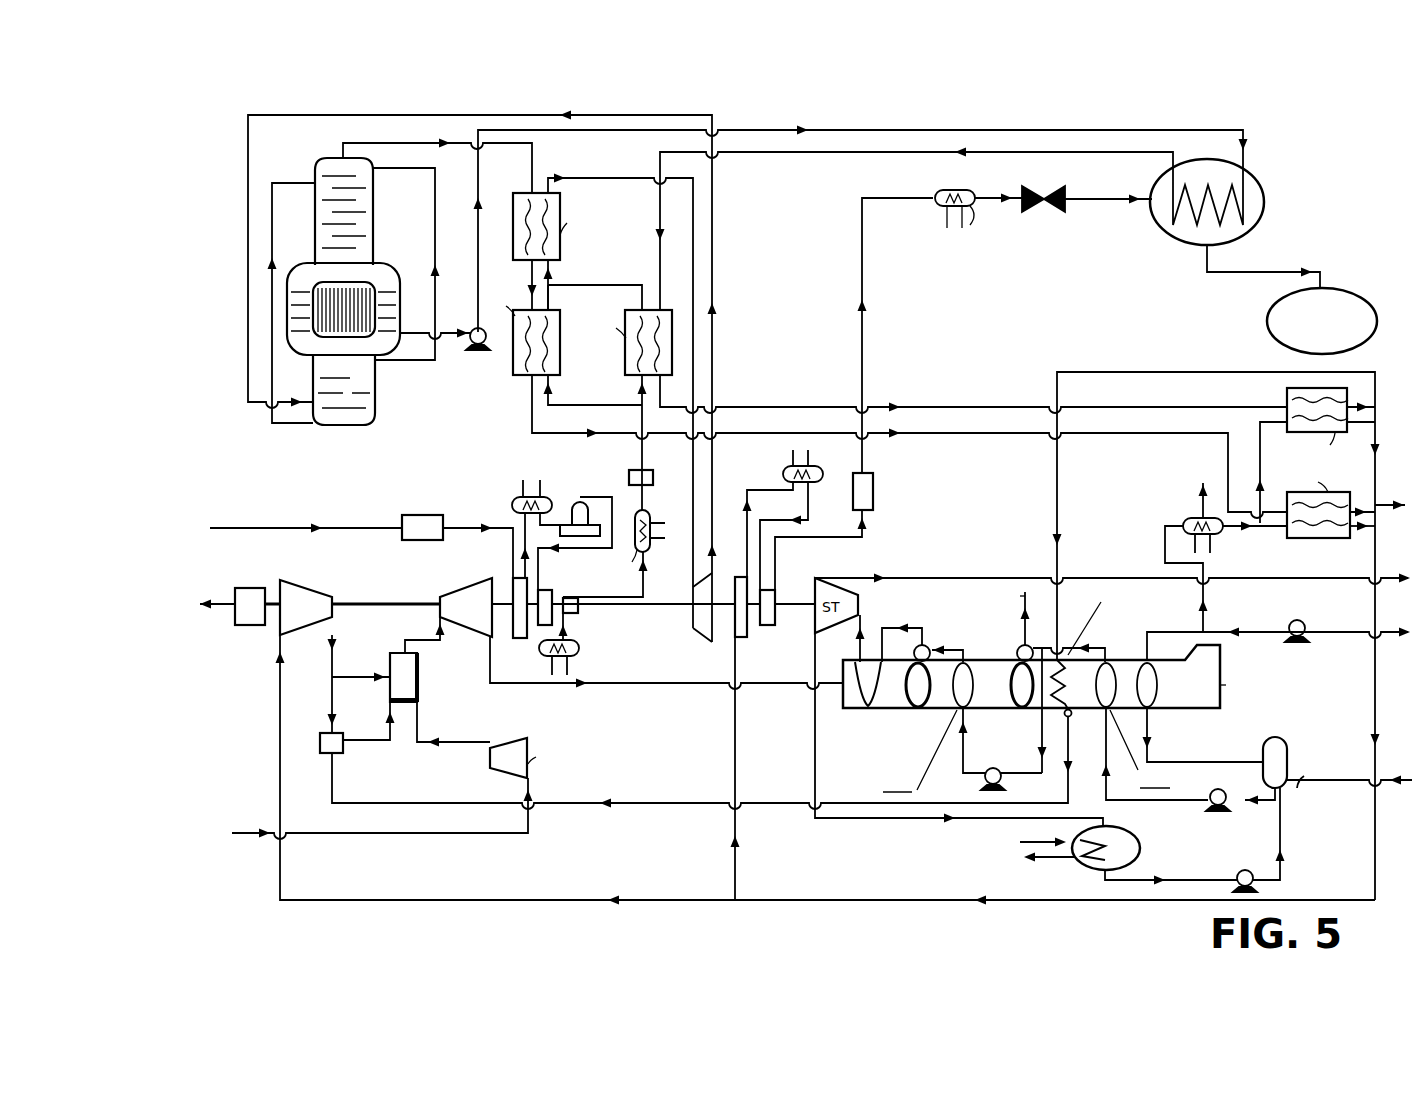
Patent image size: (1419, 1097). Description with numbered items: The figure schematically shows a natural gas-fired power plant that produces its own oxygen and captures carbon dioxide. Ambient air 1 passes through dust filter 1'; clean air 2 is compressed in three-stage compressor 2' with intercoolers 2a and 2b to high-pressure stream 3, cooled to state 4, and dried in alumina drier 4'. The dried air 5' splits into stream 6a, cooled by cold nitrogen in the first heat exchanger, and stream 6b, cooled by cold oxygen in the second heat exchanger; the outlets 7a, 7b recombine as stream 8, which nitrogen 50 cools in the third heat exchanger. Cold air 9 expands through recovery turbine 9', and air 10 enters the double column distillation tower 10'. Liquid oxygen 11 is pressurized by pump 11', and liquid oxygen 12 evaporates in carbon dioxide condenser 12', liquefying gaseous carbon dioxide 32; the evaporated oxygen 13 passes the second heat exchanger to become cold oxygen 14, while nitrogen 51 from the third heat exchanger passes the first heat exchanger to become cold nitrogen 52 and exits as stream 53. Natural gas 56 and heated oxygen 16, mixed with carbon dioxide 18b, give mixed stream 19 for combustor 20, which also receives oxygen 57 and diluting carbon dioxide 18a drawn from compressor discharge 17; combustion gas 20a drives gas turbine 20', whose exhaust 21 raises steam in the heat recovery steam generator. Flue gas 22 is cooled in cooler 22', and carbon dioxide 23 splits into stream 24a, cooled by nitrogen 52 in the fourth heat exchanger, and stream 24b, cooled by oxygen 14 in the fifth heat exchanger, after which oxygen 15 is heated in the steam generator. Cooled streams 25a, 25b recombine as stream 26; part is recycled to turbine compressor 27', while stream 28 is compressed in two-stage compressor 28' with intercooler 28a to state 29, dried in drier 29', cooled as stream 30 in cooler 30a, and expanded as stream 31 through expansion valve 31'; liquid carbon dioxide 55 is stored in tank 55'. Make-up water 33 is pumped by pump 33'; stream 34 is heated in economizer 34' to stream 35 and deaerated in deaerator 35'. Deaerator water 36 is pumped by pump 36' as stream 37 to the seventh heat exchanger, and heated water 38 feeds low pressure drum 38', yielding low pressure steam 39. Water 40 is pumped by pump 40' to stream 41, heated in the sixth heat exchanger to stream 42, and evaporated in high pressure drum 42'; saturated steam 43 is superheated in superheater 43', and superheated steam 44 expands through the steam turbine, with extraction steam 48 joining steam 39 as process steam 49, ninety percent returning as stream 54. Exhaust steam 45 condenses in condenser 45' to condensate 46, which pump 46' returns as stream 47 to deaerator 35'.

The ambient air stream 1 is at (306, 518).
The dust filter 1' is at (433, 518).
The clean air stream 2 is at (478, 540).
The cooler 2a is at (513, 504).
The cooler 2b is at (584, 649).
The three-stage compressor 2' is at (592, 608).
The compressed air stream 3 is at (641, 584).
The cooled air state 4 is at (618, 527).
The alumina drier 4' is at (628, 467).
The dried air stream 5' is at (655, 445).
The air stream 6a is at (551, 398).
The air stream 6b is at (638, 394).
The air stream from HX1 7a is at (548, 297).
The air stream from HX2 7b is at (642, 297).
The recombined air stream 8 is at (556, 270).
The compressed cold air stream 9 is at (620, 371).
The recovery turbine 9' is at (693, 629).
The air stream 10 is at (495, 368).
The double column distillation tower 10' is at (357, 310).
The liquid oxygen stream 11 is at (435, 322).
The pump 11' is at (476, 364).
The pressurized liquid oxygen stream 12 is at (850, 219).
The CO2 condenser 12' is at (1271, 198).
The oxygen return stream 13 is at (1068, 152).
The cold oxygen stream 14 is at (660, 390).
The gaseous oxygen stream 15 is at (1180, 372).
The heated oxygen stream 16 is at (373, 803).
The CO2 stream from compressor 17 is at (332, 669).
The CO2 stream 18a is at (358, 677).
The CO2 stream 18b is at (332, 698).
The mixed stream 19 is at (377, 745).
The combustor 20 is at (450, 686).
The gas turbine 20' is at (455, 603).
The combustion gas stream 20a is at (420, 635).
The CO2/H2O exhaust stream 21 is at (617, 688).
The flue gas stream 22 is at (1172, 579).
The cooler 22' is at (1150, 517).
The cooled CO2 stream 23 is at (1236, 528).
The CO2 stream 24a is at (1276, 530).
The CO2 stream 24b is at (1260, 422).
The water stream from HX4 25a is at (1362, 530).
The water stream from HX5 25b is at (1358, 424).
The recombined CO2 stream 26 is at (1375, 691).
The compressor 27' is at (467, 727).
The CO2 stream 28 is at (721, 768).
The two-stage compressor 28' is at (695, 624).
The cooler 28a is at (788, 470).
The compressed CO2 state 29 is at (821, 550).
The drier 29' is at (889, 495).
The compressed dry CO2 stream 30 is at (864, 372).
The cooler 30a is at (953, 226).
The cooled CO2 stream 31 is at (998, 189).
The expansion valve 31' is at (1052, 226).
The pure CO2 gas stream 32 is at (1091, 199).
The make-up water stream 33 is at (1400, 651).
The pump 33' is at (1305, 635).
The pumped water stream 34 is at (1206, 648).
The economizer 34' is at (1192, 708).
The heated water stream 35 is at (1203, 735).
The deaerator 35' is at (1304, 748).
The mixed water state 36 is at (1252, 788).
The pump 36' is at (1229, 812).
The water stream to HX7 37 is at (1140, 804).
The water stream to LP drum 38 is at (1075, 697).
The low pressure drum 38' is at (1008, 699).
The low pressure steam stream 39 is at (1023, 618).
The water stream 40 is at (1021, 763).
The pump 40' is at (1048, 693).
The high pressure water stream 41 is at (963, 768).
The heated water stream 42 is at (952, 666).
The high pressure drum 42' is at (915, 697).
The saturated steam stream 43 is at (927, 632).
The superheater 43' is at (1050, 708).
The superheated steam stream 44 is at (860, 642).
The exhaust steam stream 45 is at (940, 735).
The condenser 45' is at (1059, 861).
The condensate state 46 is at (1171, 867).
The pump 46' is at (1226, 875).
The condensate return stream 47 is at (1283, 873).
The extracted steam stream 48 is at (910, 578).
The process steam stream 49 is at (1385, 572).
The nitrogen stream 50 is at (369, 143).
The nitrogen stream to HX1 51 is at (532, 271).
The cold nitrogen stream 52 is at (532, 413).
The nitrogen outlet 53 is at (1385, 510).
The returned process steam stream 54 is at (1405, 785).
The liquid CO2 stream 55 is at (1263, 267).
The CO2 tank 55' is at (1335, 321).
The natural gas inlet 56 is at (255, 828).
The oxygen stream to combustor 57 is at (460, 744).